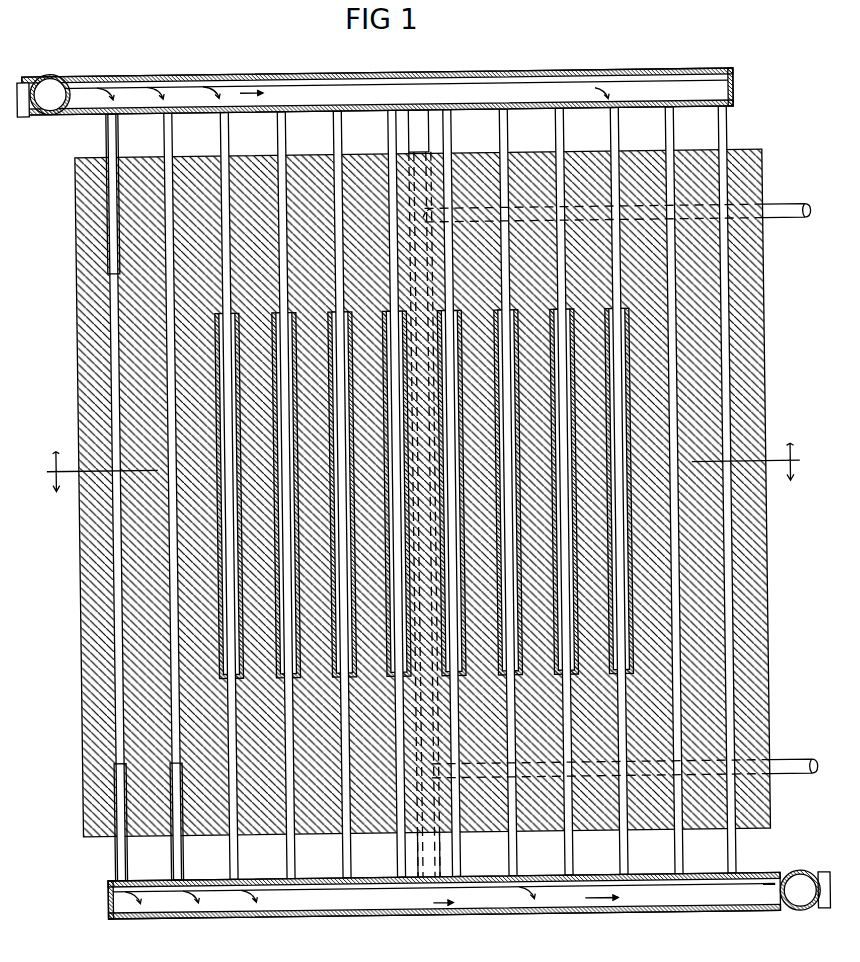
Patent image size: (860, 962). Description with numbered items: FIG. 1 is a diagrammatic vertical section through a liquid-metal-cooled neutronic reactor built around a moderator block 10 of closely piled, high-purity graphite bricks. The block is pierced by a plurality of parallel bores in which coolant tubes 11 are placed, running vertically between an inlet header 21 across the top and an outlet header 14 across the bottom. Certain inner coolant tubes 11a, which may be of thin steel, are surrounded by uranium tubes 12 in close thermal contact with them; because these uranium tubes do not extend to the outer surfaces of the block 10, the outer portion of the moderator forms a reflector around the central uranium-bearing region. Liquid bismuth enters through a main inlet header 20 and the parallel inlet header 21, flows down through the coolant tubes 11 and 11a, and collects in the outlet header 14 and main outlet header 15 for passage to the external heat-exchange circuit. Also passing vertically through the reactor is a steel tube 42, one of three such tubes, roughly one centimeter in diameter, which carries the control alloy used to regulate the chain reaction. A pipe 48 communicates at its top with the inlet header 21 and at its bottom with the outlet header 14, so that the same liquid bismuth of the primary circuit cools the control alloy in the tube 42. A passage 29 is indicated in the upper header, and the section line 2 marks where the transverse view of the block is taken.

The moderator block 10 is at (759, 361).
The coolant tubes 11 is at (111, 128).
The inner coolant tubes 11a is at (329, 136).
The uranium tubes 12 is at (219, 560).
The outlet header 14 is at (322, 917).
The main outlet header 15 is at (787, 915).
The main inlet header 20 is at (56, 82).
The inlet header 21 is at (153, 74).
The header outlet passage 29 is at (585, 89).
The steel tube 42 is at (786, 210).
The pipe 48 is at (426, 132).
The section line 2- 2 is at (421, 454).